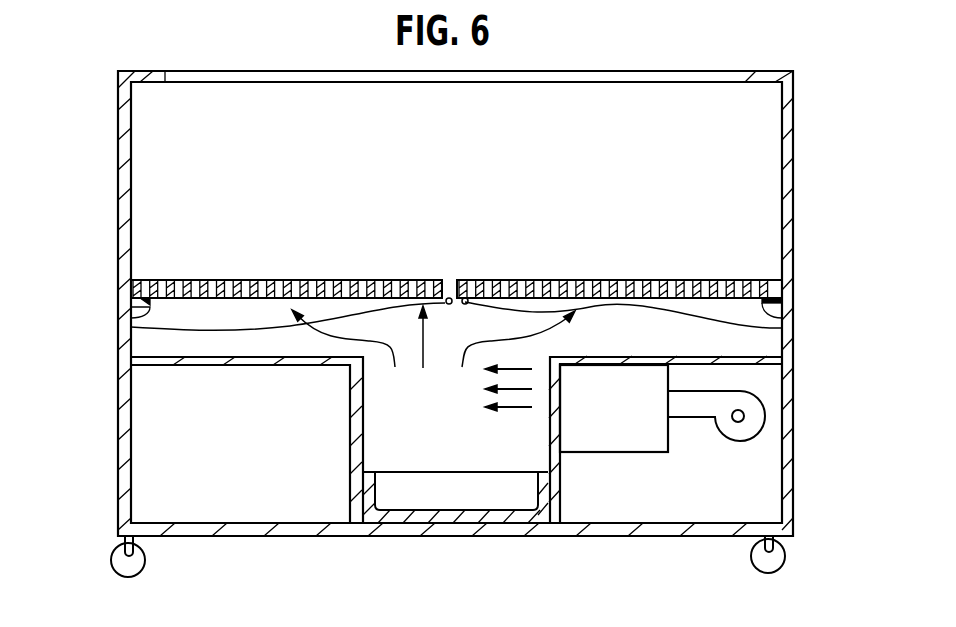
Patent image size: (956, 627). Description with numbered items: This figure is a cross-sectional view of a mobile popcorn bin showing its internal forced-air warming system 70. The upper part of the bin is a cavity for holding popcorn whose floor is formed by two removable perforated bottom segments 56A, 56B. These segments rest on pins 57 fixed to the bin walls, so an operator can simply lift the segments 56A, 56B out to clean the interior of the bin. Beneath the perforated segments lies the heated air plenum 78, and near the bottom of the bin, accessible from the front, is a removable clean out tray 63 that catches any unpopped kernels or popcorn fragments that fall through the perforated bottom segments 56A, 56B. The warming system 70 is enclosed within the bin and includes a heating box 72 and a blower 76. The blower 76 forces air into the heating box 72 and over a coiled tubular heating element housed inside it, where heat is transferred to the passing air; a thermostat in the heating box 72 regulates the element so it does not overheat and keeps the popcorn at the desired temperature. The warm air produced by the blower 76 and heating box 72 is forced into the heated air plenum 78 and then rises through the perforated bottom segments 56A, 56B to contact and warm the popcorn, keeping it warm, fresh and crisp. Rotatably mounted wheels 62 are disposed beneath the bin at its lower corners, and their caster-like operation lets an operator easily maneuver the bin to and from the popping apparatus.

The removable perforated bottom segment 56A is at (250, 279).
The removable perforated bottom segment 56B is at (670, 279).
The pins 57 is at (131, 327).
The heated air plenum 78 is at (430, 437).
The removable clean out tray 63 is at (460, 486).
The heating box 72 is at (606, 452).
The forced-air warming system 70 is at (648, 482).
The blower 76 is at (742, 441).
The wheels 62 is at (111, 558).